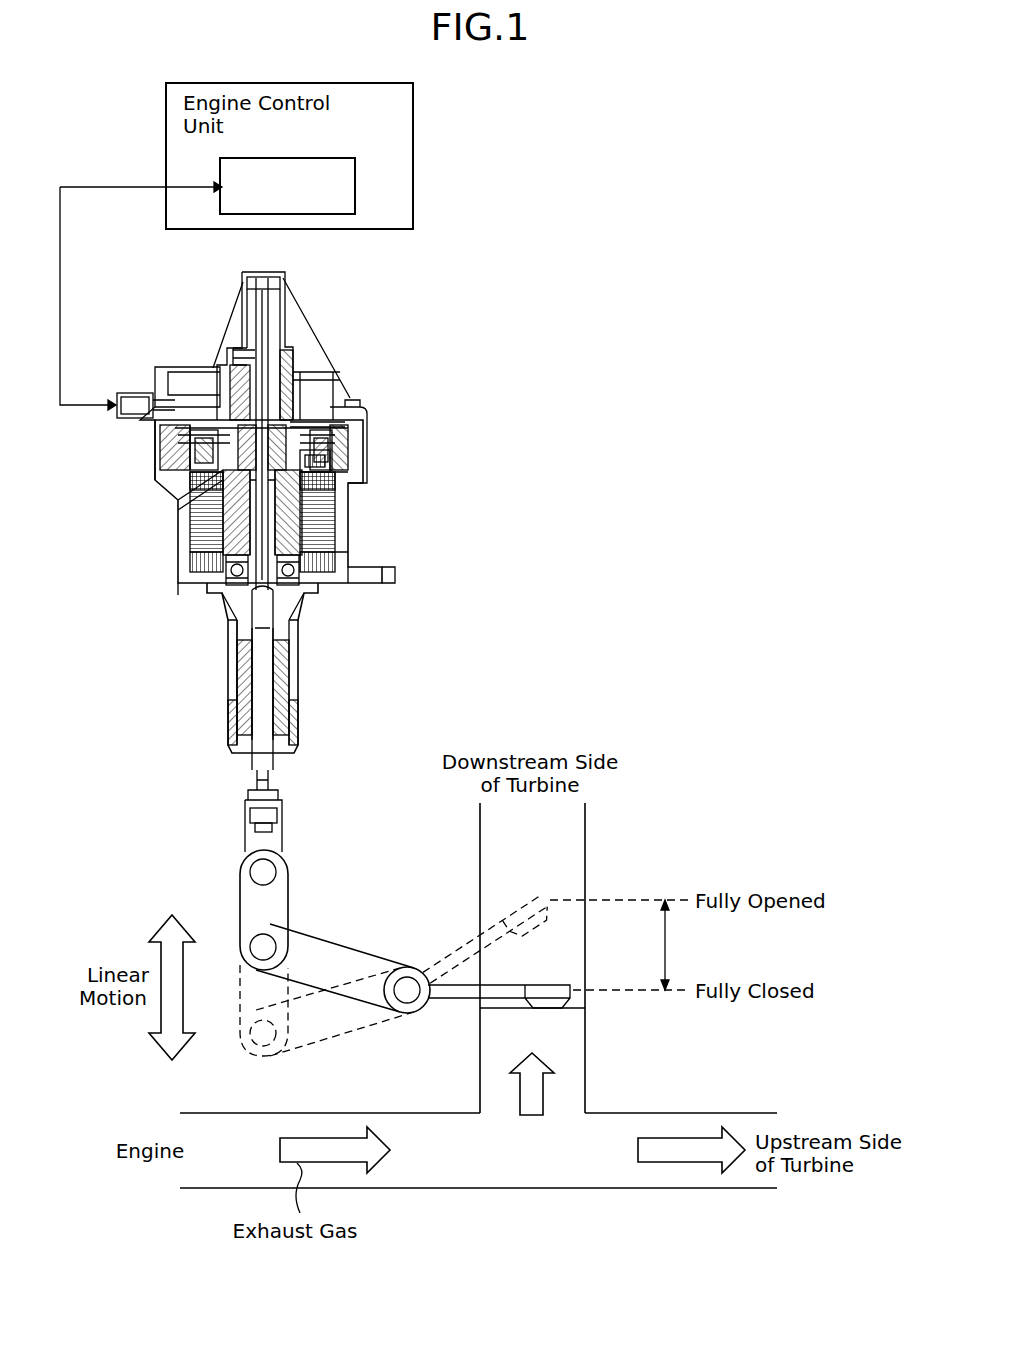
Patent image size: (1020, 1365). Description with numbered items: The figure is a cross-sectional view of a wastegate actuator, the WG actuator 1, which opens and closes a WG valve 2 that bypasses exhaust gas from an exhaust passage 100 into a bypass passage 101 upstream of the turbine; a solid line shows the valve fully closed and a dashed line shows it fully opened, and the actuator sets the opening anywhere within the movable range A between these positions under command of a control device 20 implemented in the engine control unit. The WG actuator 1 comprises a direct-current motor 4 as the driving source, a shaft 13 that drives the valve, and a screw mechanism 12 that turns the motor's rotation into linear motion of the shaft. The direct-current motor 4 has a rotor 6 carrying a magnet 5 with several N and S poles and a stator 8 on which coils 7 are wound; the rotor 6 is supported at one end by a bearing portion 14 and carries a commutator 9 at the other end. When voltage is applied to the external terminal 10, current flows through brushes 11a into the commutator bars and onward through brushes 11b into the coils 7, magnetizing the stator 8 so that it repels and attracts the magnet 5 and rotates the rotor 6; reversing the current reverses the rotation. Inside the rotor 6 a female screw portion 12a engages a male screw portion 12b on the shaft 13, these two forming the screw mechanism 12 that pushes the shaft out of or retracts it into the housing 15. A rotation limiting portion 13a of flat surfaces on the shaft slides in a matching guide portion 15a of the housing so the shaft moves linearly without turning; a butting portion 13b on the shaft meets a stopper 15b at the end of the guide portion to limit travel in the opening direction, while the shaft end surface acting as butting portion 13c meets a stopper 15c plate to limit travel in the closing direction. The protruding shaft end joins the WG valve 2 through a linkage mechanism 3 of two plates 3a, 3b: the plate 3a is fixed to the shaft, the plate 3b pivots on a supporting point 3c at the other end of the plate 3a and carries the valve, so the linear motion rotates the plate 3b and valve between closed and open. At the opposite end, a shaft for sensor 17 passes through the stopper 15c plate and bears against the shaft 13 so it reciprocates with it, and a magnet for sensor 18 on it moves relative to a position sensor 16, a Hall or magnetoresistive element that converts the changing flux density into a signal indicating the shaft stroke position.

The WG actuator 1 is at (268, 545).
The WG valve 2 is at (557, 990).
The linkage mechanism 3 is at (346, 936).
The plate 3a is at (283, 893).
The plate 3b is at (330, 960).
The supporting point 3c is at (252, 950).
The direct-current motor 4 is at (327, 372).
The magnet 5 is at (336, 534).
The rotor 6 is at (302, 528).
The coils 7 is at (185, 497).
The stator 8 is at (190, 522).
The commutator 9 is at (362, 462).
The external terminal 10 is at (150, 405).
The brushes 11a is at (157, 443).
The brushes 11b is at (353, 437).
The screw mechanism 12 is at (190, 518).
The female screw portion 12a is at (190, 535).
The male screw portion 12b is at (190, 548).
The shaft 13 is at (268, 760).
The rotation limiting portion 13a is at (255, 620).
The butting portion 13b is at (243, 652).
The butting portion 13c is at (352, 478).
The bearing portion 14 is at (205, 575).
The housing 15 is at (302, 612).
The guide portion 15a is at (270, 663).
The stopper 15b is at (236, 704).
The stopper 15c is at (300, 420).
The position sensor 16 is at (252, 350).
The shaft for sensor 17 is at (267, 383).
The magnet for sensor 18 is at (265, 327).
The control device 20 is at (331, 158).
The exhaust passage 100 is at (593, 1190).
The bypass passage 101 is at (587, 848).
The movable range A is at (675, 945).